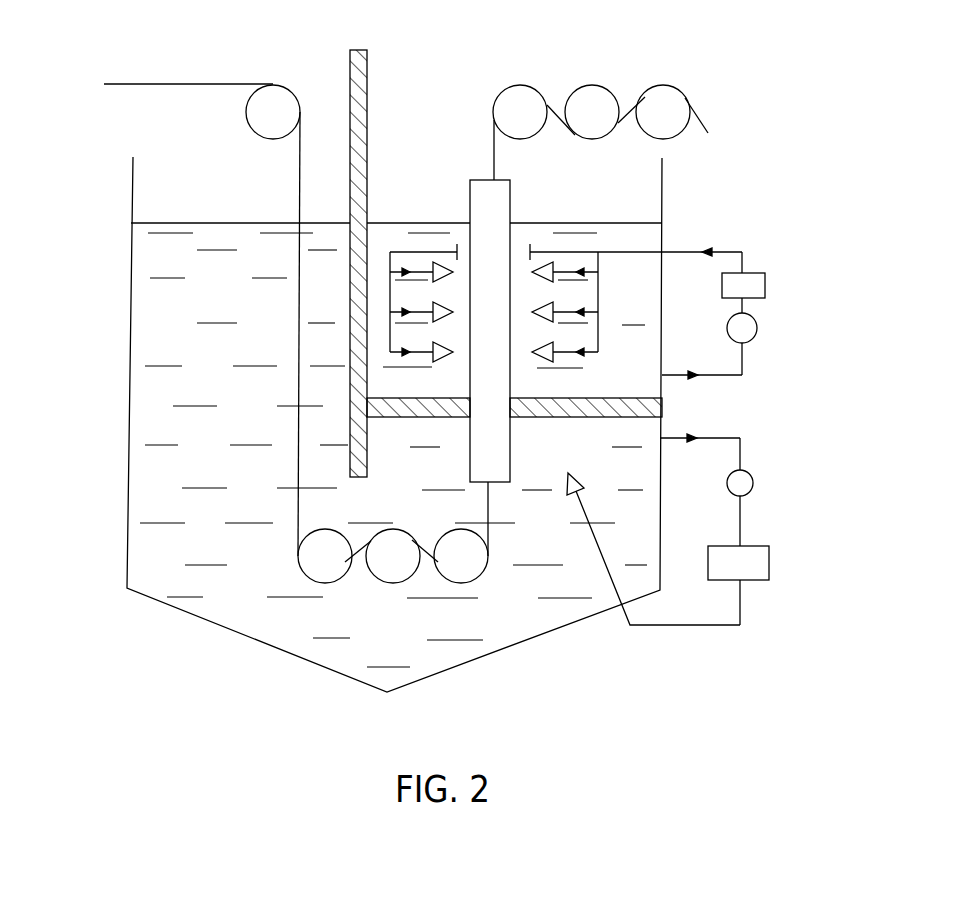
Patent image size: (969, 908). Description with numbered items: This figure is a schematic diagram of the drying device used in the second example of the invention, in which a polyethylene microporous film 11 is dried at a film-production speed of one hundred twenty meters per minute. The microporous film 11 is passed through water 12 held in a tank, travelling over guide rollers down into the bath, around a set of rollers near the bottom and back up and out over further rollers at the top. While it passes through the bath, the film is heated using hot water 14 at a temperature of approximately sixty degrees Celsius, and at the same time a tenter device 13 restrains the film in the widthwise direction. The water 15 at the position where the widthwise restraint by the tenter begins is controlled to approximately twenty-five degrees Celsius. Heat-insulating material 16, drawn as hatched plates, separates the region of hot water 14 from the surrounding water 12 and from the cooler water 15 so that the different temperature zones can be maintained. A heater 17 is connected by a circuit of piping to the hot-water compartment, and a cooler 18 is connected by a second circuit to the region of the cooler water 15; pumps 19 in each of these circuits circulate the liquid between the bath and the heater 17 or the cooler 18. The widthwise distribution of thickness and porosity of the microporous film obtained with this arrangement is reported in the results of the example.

The microporous film 11 is at (186, 70).
The water 12 is at (146, 313).
The tenter device 13 is at (506, 287).
The hot water 14 is at (642, 295).
The water 15 is at (554, 460).
The heat-insulating material 16 is at (368, 96).
The heater 17 is at (765, 284).
The cooler 18 is at (769, 563).
The pumps 19 is at (757, 328).